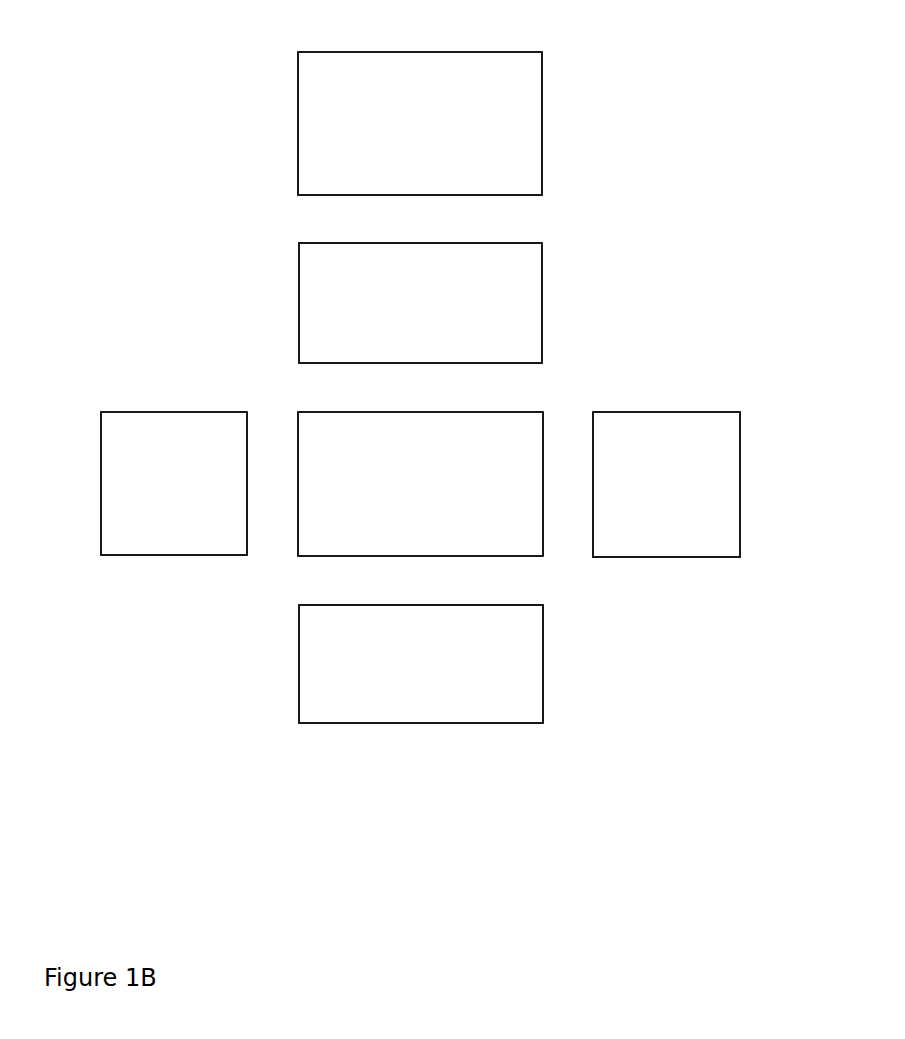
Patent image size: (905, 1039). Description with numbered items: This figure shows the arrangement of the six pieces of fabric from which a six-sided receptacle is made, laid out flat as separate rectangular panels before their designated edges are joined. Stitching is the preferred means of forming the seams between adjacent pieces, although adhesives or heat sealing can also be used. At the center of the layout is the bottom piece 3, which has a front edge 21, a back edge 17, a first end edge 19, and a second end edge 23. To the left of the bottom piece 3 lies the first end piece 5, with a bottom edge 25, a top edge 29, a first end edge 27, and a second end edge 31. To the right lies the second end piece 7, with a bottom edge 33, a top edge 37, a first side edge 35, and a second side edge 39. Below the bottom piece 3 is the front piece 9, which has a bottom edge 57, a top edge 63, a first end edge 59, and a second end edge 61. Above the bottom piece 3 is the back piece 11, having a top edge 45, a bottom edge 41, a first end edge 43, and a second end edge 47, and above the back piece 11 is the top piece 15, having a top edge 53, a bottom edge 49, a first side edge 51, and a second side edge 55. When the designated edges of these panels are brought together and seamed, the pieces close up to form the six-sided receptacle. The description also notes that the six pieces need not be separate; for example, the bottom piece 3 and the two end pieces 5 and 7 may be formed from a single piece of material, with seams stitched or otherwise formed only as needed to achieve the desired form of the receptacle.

The bottom piece 3 is at (383, 503).
The first end piece 5 is at (145, 484).
The second end piece 7 is at (715, 438).
The front piece 9 is at (522, 678).
The back piece 11 is at (510, 302).
The top piece 15 is at (510, 133).
The back edge 17 is at (517, 413).
The first end edge 19 is at (543, 417).
The front edge 21 is at (520, 556).
The second end edge 23 is at (296, 413).
The bottom edge 25 is at (247, 552).
The first end edge 27 is at (172, 556).
The top edge 29 is at (101, 517).
The second end edge 31 is at (130, 412).
The bottom edge 33 is at (592, 535).
The first side edge 35 is at (643, 412).
The top edge 37 is at (740, 514).
The second side edge 39 is at (689, 557).
The bottom edge 41 is at (305, 365).
The first end edge 43 is at (299, 265).
The top edge 45 is at (520, 243).
The second end edge 47 is at (542, 280).
The bottom edge 49 is at (306, 195).
The first side edge 51 is at (298, 130).
The top edge 53 is at (415, 52).
The second side edge 55 is at (542, 84).
The bottom edge 57 is at (516, 605).
The first end edge 59 is at (299, 680).
The second end edge 61 is at (543, 723).
The top edge 63 is at (348, 721).